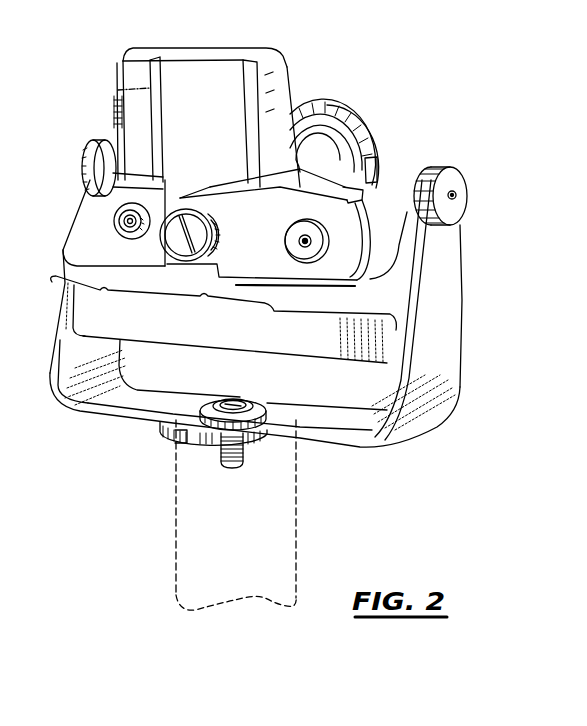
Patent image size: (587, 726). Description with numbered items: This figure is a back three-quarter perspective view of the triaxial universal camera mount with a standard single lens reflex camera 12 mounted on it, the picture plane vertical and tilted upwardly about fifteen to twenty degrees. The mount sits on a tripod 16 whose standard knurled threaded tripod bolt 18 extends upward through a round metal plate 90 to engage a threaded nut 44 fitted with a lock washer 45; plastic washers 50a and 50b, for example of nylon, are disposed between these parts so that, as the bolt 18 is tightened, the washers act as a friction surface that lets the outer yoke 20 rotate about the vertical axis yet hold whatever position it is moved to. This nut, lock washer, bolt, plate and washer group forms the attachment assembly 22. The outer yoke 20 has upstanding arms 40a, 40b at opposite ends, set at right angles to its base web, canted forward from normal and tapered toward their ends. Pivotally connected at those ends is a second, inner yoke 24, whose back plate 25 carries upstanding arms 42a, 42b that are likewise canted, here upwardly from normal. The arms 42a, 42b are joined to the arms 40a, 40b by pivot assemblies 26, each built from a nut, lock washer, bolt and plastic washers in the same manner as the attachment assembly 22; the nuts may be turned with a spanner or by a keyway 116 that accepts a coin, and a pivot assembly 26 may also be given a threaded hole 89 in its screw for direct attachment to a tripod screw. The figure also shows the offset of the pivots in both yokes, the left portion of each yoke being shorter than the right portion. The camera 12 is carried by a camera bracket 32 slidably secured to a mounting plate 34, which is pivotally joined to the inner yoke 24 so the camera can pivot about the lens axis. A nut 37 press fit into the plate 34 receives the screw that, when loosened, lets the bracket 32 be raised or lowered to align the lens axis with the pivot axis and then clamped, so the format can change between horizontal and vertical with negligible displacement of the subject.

The camera 12 is at (228, 141).
The keyway 116 is at (180, 203).
The pivot assembly 26 is at (93, 133).
The camera bracket 32 is at (363, 190).
The mounting plate 34 is at (345, 237).
The nut 37 is at (356, 240).
The threaded hole 89 is at (456, 195).
The arm 42a is at (400, 284).
The arm 42b is at (103, 248).
The arm 40a is at (442, 369).
The arm 40b is at (95, 366).
The back plate 25 is at (322, 352).
The inner yoke 24 is at (207, 353).
The outer yoke 20 is at (162, 414).
The attachment assembly 22 is at (243, 396).
The threaded nut 44 is at (256, 400).
The lock washer 45 is at (268, 405).
The plastic washer 50a is at (280, 410).
The plastic washer 50b is at (173, 431).
The round metal plate 90 is at (183, 441).
The tripod bolt 18 is at (217, 455).
The tripod 16 is at (245, 593).